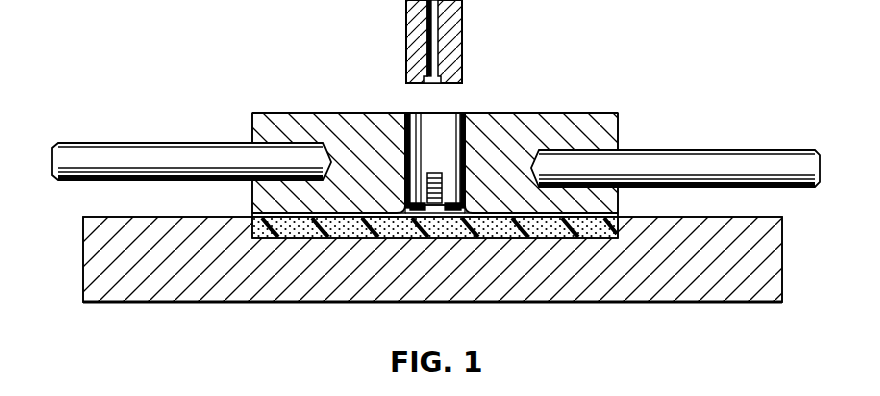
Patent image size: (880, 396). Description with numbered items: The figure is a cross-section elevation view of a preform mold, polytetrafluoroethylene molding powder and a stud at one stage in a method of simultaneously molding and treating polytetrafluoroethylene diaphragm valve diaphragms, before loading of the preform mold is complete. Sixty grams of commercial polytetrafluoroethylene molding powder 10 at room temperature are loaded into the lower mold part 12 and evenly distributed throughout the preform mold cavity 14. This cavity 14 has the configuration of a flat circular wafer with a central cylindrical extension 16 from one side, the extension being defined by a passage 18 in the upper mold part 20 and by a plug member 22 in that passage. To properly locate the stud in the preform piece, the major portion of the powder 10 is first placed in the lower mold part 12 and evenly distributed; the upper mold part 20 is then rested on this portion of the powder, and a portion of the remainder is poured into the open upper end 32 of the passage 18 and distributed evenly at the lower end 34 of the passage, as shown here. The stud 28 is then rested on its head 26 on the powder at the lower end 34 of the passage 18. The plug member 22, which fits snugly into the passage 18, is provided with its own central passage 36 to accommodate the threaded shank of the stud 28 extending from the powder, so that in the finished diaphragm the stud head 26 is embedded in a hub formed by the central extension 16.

The polytetrafluoroethylene molding powder 10 is at (621, 215).
The lower mold part 12 is at (90, 237).
The preform mold cavity 14 is at (256, 232).
The central cylindrical extension 16 is at (458, 200).
The passage 18 is at (421, 173).
The upper mold part 20 is at (281, 119).
The plug member 22 is at (411, 46).
The head of stud 26 is at (433, 240).
The stud 28 is at (430, 238).
The open upper end 32 is at (432, 118).
The lower end of passage 34 is at (385, 240).
The central passage 36 is at (433, 56).